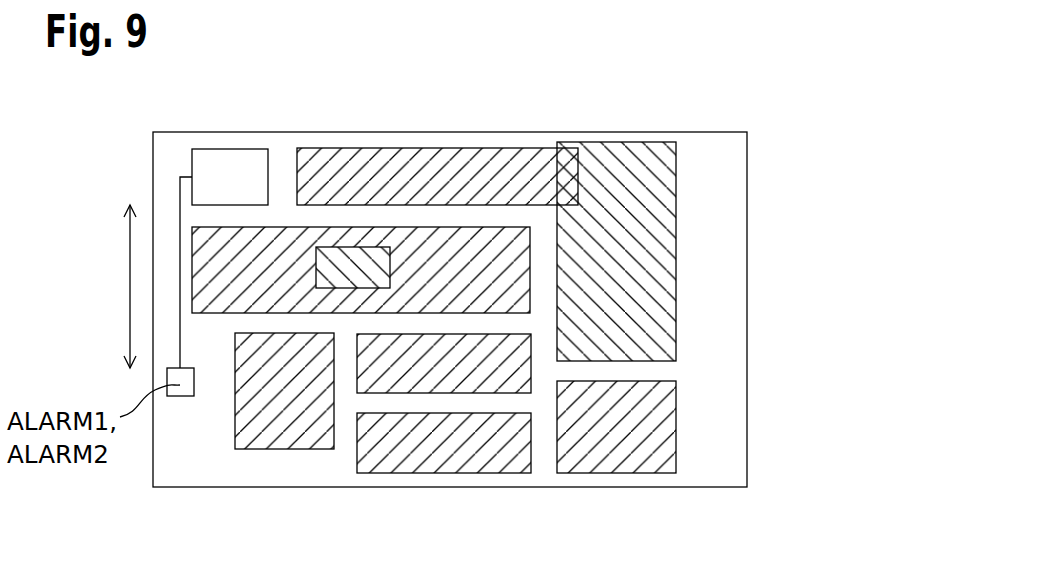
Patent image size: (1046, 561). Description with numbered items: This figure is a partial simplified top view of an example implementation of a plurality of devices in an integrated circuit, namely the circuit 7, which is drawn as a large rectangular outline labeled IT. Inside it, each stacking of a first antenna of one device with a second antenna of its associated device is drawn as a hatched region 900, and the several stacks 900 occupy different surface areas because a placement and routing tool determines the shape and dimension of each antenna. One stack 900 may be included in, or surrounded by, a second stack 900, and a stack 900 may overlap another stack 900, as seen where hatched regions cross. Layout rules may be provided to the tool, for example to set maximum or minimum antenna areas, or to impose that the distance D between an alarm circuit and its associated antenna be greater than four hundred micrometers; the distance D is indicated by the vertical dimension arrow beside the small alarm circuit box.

The stack of antennas 900 is at (218, 147).
The circuit 7 is at (500, 309).
The information terminal IT is at (718, 270).
The distance D is at (128, 278).